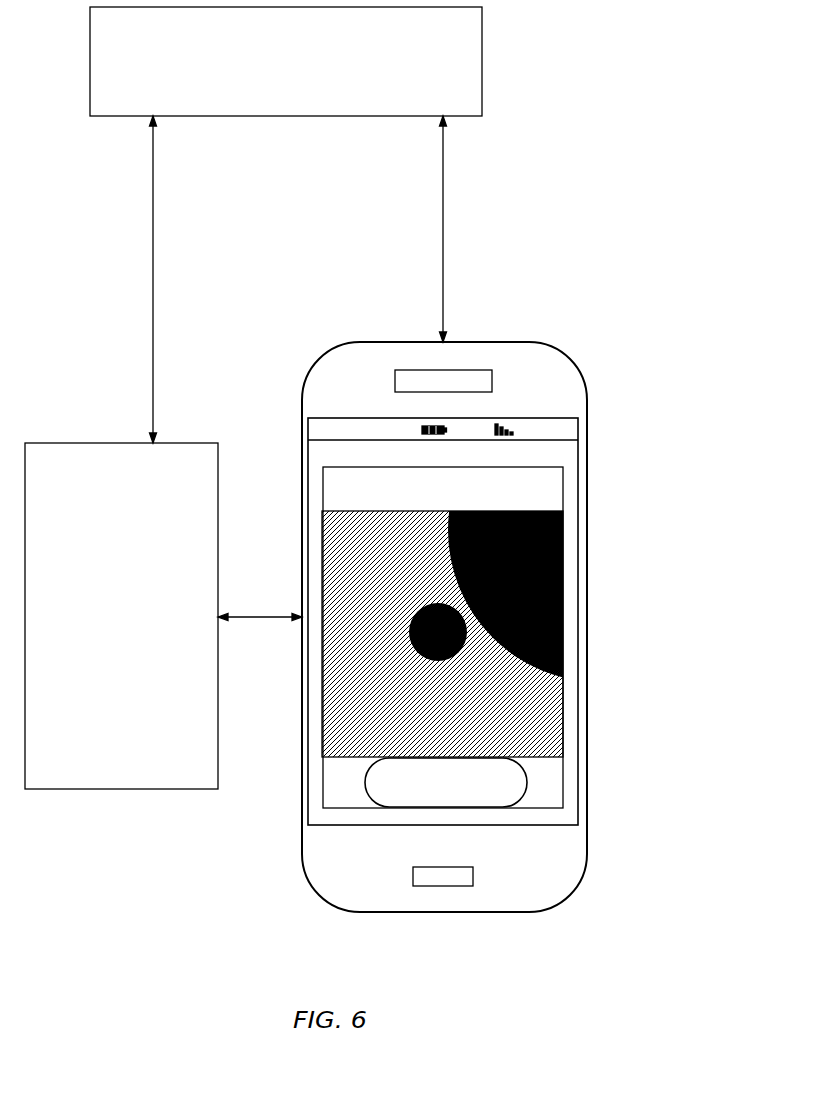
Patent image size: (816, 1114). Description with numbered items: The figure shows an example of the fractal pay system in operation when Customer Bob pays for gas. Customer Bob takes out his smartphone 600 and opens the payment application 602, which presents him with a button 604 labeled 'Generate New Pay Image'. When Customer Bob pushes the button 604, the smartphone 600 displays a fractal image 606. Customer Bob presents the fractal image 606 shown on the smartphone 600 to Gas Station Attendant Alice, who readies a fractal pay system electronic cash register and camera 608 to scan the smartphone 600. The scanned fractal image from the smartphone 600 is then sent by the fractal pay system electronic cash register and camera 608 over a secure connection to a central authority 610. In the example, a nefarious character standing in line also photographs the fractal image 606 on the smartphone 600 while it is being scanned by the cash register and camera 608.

The smartphone 600 is at (490, 330).
The payment application 602 is at (560, 473).
The button 604 is at (535, 779).
The fractal image 606 is at (575, 608).
The fractal pay system electronic cash register and camera 608 is at (138, 673).
The central authority 610 is at (300, 83).